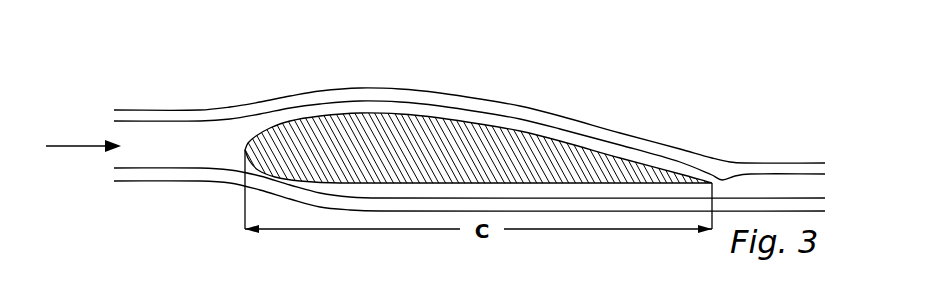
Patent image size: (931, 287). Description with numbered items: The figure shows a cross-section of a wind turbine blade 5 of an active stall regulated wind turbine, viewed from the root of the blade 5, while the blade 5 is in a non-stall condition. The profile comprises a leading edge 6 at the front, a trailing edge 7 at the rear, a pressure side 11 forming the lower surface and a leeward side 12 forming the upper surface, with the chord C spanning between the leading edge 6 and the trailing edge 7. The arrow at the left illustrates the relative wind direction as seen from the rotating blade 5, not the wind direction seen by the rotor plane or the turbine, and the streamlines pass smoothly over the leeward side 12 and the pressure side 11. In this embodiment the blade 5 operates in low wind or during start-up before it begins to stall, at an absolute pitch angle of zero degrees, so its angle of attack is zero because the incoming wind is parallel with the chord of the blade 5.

The wind turbine blade 5 is at (357, 136).
The leading edge 6 is at (249, 137).
The trailing edge 7 is at (735, 165).
The pressure side 11 is at (410, 181).
The leeward side 12 is at (457, 118).